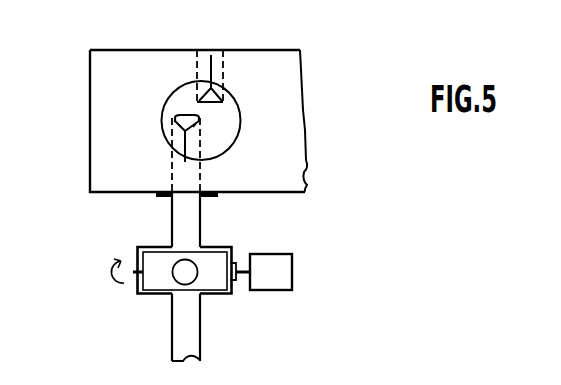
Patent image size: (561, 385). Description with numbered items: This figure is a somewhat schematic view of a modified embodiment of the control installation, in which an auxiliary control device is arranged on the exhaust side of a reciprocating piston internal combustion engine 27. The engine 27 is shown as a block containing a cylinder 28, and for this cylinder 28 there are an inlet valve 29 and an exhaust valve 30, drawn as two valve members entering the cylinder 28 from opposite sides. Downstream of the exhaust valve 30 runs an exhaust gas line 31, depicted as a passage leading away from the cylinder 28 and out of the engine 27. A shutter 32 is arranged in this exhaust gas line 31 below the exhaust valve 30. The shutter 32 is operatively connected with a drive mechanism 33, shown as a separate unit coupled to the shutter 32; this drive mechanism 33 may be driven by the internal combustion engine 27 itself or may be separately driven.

The reciprocating piston internal combustion engine 27 is at (300, 50).
The cylinder 28 is at (239, 137).
The inlet valve 29 is at (211, 56).
The exhaust valve 30 is at (185, 147).
The exhaust gas line 31 is at (200, 342).
The shutter 32 is at (157, 280).
The drive mechanism 33 is at (292, 270).